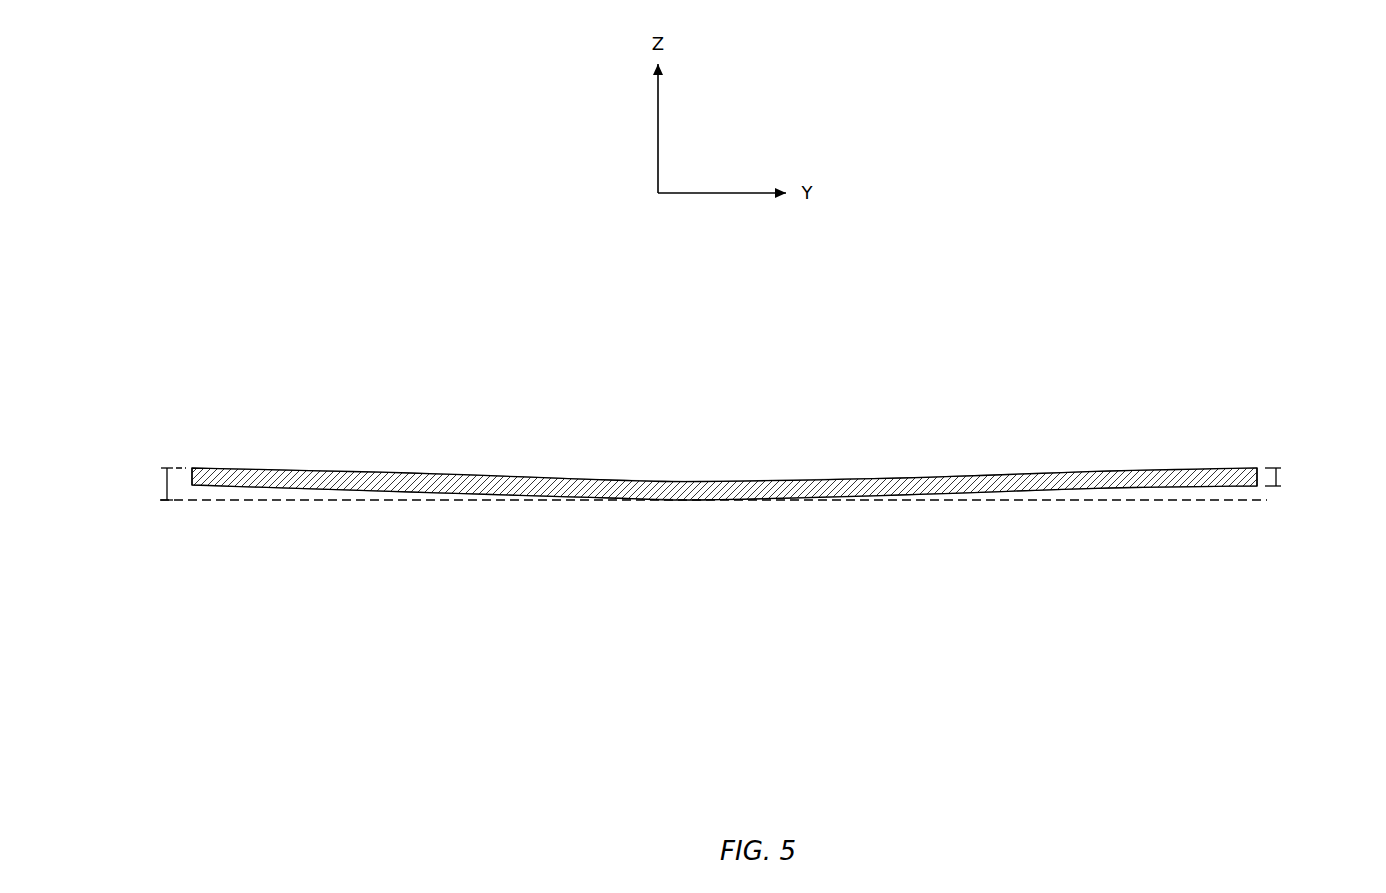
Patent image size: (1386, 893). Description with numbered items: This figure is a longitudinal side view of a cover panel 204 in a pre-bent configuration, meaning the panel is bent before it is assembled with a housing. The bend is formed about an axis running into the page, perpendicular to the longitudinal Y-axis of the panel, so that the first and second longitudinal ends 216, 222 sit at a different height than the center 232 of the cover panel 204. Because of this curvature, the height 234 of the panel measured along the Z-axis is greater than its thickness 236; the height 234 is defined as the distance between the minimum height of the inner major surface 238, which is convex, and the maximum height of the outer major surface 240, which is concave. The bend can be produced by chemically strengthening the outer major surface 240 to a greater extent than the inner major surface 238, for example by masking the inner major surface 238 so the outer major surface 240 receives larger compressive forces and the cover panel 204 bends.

The cover panel 204 is at (233, 270).
The first longitudinal end 216 is at (192, 452).
The second longitudinal end 222 is at (1257, 448).
The center 232 is at (715, 467).
The height 234 is at (166, 485).
The thickness 236 is at (1280, 480).
The inner major surface 238 is at (1187, 488).
The outer major surface 240 is at (903, 478).